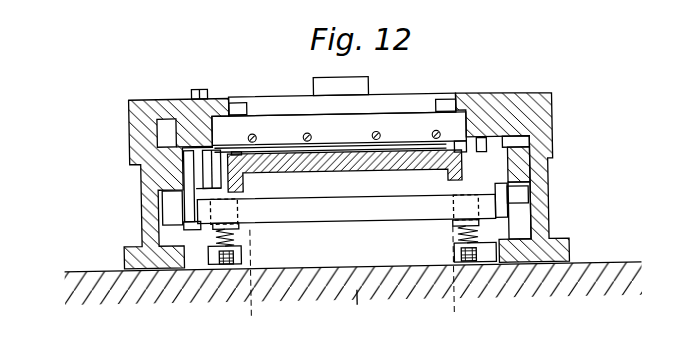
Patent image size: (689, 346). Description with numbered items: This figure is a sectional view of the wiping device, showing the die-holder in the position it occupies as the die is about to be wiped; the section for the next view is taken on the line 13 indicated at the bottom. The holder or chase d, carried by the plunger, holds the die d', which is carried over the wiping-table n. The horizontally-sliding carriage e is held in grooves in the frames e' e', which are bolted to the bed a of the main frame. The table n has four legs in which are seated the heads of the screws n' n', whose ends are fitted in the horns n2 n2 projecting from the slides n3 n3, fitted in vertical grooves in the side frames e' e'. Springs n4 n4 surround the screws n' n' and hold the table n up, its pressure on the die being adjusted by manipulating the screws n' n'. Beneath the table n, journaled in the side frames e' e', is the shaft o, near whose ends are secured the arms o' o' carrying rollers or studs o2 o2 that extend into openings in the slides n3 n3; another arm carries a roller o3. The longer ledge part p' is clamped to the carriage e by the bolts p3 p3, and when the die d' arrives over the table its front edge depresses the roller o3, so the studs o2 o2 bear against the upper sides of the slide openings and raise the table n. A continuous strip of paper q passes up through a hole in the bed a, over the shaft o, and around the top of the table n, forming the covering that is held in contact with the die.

The horizontally-sliding carriage e is at (351, 93).
The frames e' is at (342, 180).
The bolts p3 is at (201, 80).
The ledge part p' is at (202, 185).
The holder or chase d is at (339, 133).
The die d' is at (431, 136).
The wiping-table n is at (345, 171).
The slides n3 is at (489, 157).
The shaft o is at (346, 206).
The rollers or studs o2 is at (345, 213).
The arms o' is at (356, 217).
The roller o3 is at (196, 185).
The screws n' is at (345, 257).
The springs n4 is at (237, 246).
The horns n2 is at (240, 259).
The strip of paper q is at (427, 244).
The bed a is at (354, 292).
The section line 13 is at (357, 313).